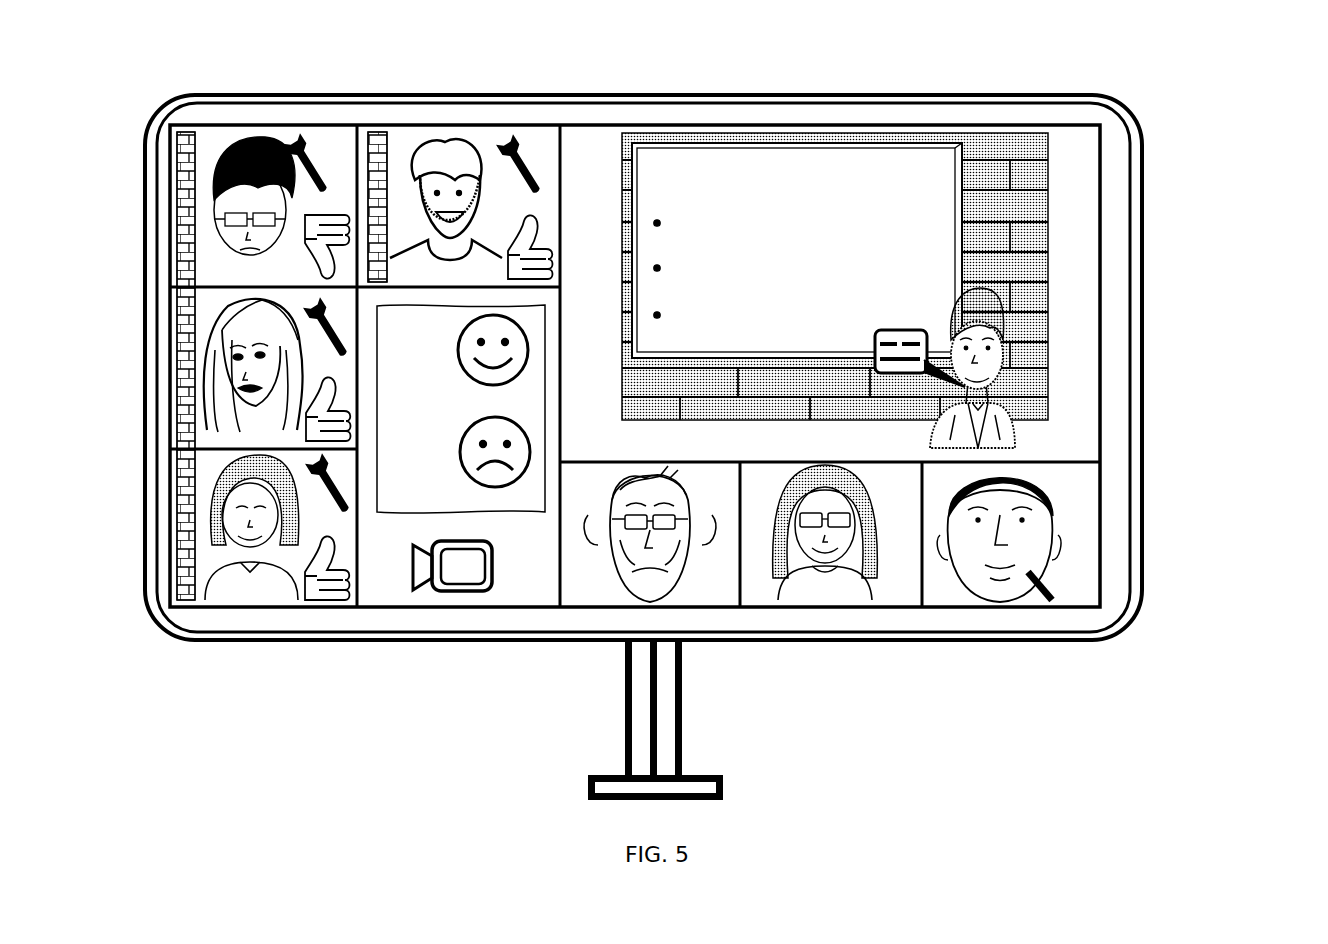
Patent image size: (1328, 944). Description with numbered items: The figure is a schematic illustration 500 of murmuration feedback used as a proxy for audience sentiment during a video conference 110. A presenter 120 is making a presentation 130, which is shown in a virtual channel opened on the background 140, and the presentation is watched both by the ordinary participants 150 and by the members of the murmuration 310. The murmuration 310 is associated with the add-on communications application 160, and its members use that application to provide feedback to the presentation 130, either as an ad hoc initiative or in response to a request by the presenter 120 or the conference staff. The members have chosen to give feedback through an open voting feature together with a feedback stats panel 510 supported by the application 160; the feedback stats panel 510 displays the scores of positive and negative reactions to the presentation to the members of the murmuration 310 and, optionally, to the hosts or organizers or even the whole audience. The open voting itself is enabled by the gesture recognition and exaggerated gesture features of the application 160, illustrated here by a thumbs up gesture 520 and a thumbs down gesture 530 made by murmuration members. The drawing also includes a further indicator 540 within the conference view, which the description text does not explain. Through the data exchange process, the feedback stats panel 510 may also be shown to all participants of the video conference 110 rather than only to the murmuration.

The video conference 110 is at (1140, 127).
The presenter 120 is at (1007, 417).
The presentation 130 is at (673, 145).
The background 140 is at (1012, 243).
The ordinary participants 150 is at (840, 605).
The add-on communications application 160 is at (302, 142).
The murmuration 310 is at (177, 195).
The schematic illustration 500 is at (1316, 96).
The feedback stats panel 510 is at (405, 512).
The thumbs up gesture 520 is at (325, 605).
The thumbs down gesture 530 is at (332, 212).
The recording indicator 540 is at (460, 593).